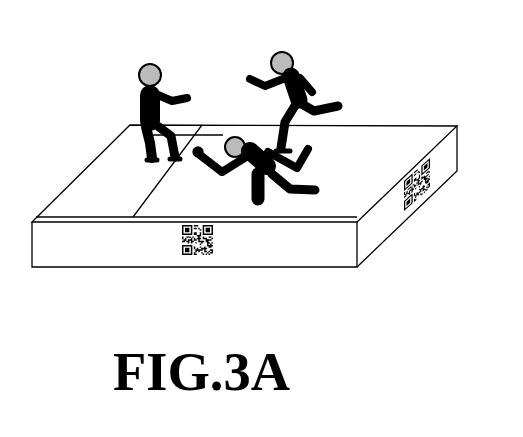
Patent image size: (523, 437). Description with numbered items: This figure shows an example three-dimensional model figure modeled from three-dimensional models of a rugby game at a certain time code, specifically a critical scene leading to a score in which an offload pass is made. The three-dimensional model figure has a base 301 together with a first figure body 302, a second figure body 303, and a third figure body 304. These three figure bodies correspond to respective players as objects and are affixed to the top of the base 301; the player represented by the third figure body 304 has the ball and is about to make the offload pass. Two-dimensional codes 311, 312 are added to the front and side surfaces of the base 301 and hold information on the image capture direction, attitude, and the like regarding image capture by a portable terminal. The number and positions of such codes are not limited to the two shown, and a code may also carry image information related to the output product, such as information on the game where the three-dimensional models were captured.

The base 301 is at (375, 125).
The first figure body 302 is at (148, 63).
The second figure body 303 is at (288, 58).
The third figure body 304 is at (315, 193).
The two-dimensional code 311 is at (187, 256).
The two-dimensional code 312 is at (417, 200).